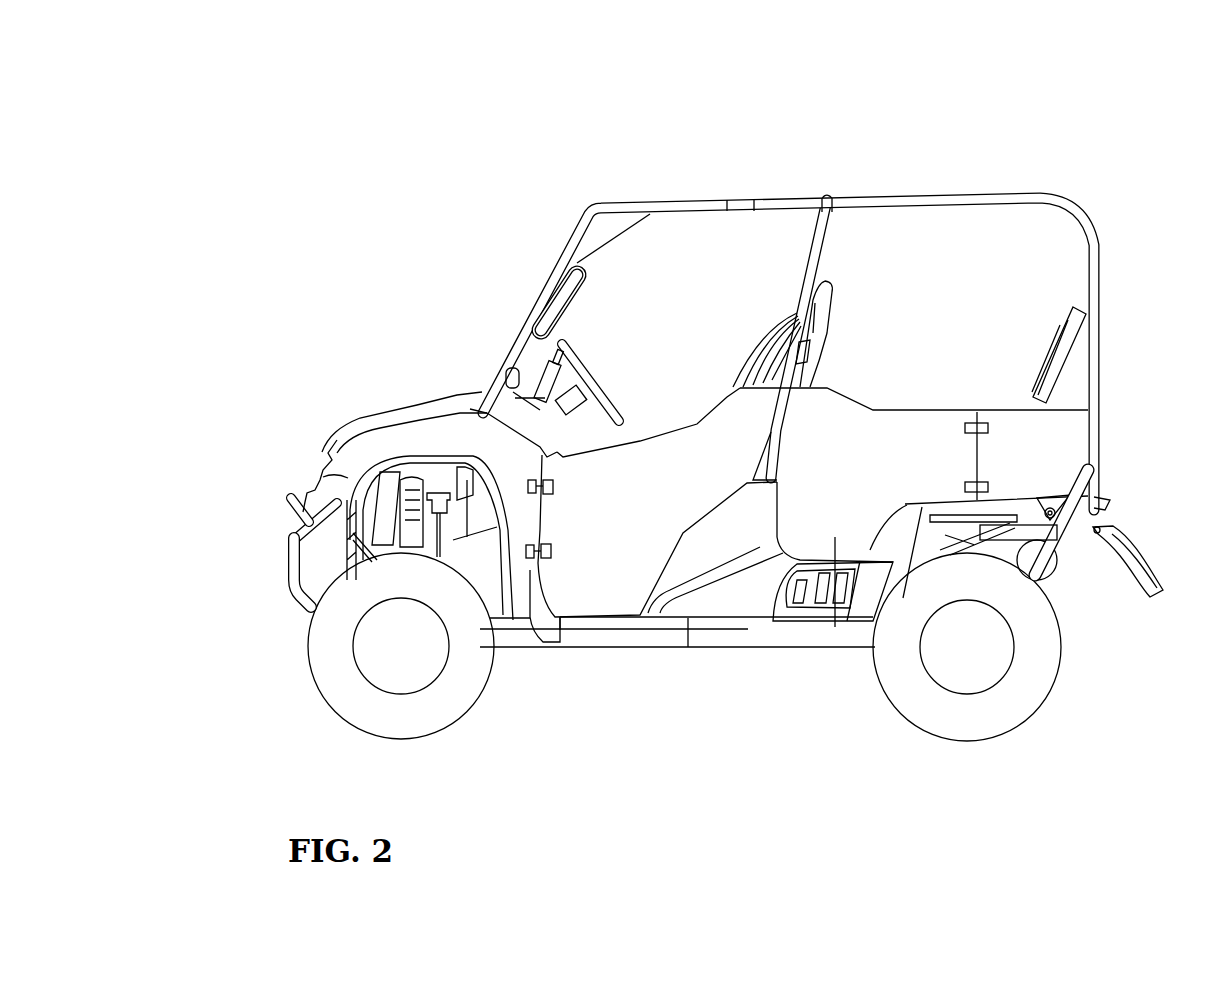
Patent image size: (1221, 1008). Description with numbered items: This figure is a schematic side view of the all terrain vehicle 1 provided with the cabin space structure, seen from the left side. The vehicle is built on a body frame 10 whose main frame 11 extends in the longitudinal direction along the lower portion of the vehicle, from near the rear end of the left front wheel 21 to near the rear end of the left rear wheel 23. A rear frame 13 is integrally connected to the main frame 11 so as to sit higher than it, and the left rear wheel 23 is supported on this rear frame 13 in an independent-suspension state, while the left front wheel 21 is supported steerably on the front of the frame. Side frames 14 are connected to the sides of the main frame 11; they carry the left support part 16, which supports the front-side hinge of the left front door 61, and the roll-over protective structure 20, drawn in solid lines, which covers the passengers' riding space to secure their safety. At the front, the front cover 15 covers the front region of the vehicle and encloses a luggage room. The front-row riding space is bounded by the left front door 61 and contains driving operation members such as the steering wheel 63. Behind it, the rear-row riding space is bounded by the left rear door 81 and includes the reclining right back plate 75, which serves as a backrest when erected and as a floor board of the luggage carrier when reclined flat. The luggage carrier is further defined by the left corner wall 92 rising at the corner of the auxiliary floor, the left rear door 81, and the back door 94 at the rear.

The all terrain vehicle 1 is at (1014, 163).
The body frame 10 is at (808, 599).
The main frame 11 is at (767, 637).
The rear frame 13 is at (1066, 547).
The side frames 14 is at (688, 622).
The front cover 15 is at (326, 478).
The left support part 16 is at (543, 645).
The roll-over protective structure 20 is at (824, 178).
The left front wheel 21 is at (401, 732).
The left rear wheel 23 is at (968, 723).
The left front door 61 is at (594, 577).
The steering wheel 63 is at (588, 360).
The right back plate 75 is at (1067, 318).
The left rear door 81 is at (822, 642).
The left corner wall 92 is at (1070, 427).
The back door 94 is at (1127, 563).